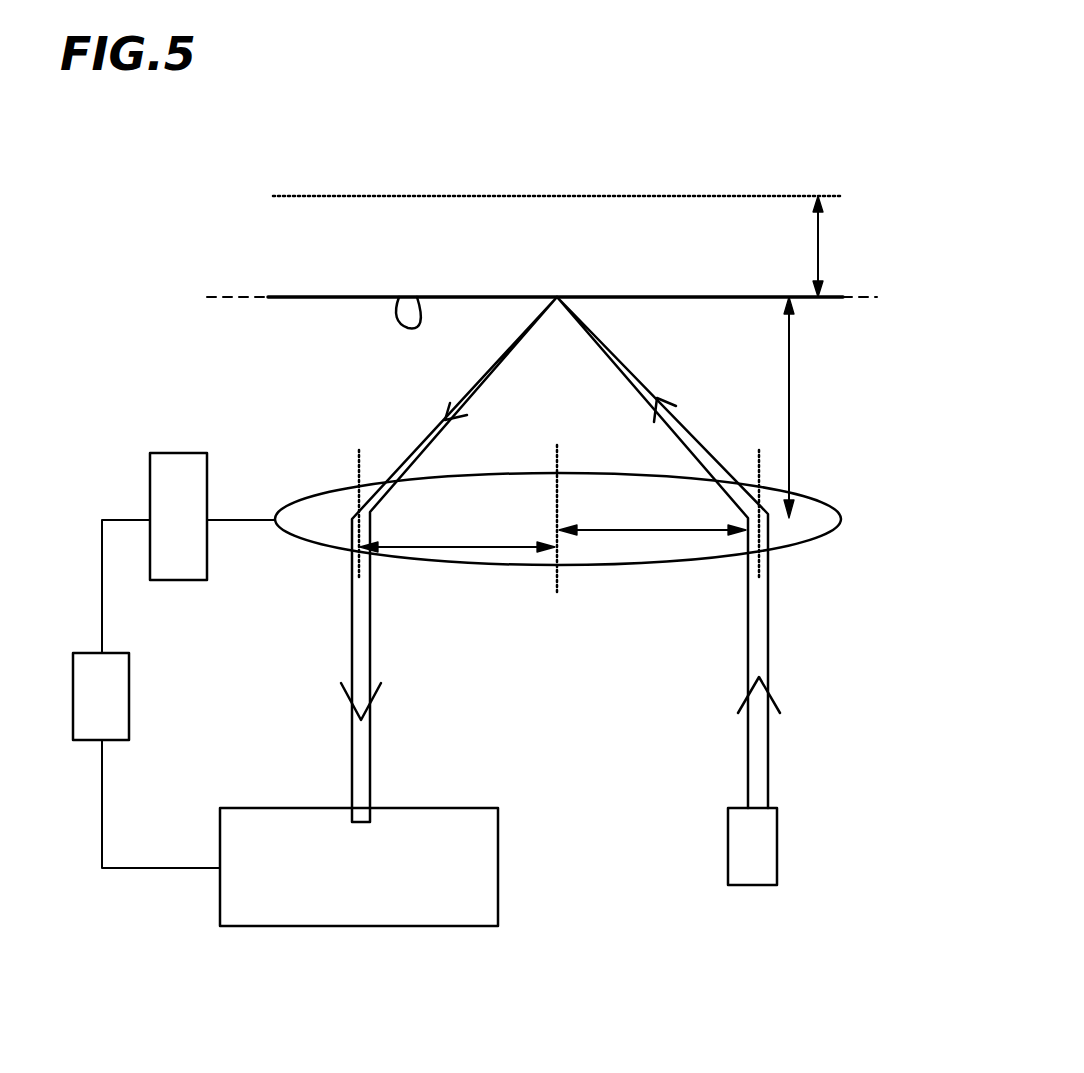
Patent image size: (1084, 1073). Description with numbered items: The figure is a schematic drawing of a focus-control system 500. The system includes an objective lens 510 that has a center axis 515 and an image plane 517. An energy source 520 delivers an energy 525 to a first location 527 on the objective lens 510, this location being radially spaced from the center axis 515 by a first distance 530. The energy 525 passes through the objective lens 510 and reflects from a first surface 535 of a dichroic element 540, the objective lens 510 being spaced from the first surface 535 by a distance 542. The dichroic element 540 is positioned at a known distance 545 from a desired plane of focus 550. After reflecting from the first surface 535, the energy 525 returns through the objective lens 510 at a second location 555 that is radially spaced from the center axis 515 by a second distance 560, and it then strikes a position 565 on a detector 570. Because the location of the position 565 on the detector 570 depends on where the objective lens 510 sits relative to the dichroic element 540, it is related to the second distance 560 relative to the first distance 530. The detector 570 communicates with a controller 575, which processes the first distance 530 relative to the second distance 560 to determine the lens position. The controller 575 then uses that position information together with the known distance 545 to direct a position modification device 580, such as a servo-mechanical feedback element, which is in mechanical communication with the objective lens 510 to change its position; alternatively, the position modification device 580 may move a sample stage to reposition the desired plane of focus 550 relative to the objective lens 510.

The system 500 is at (728, 132).
The objective lens 510 is at (830, 520).
The center axis 515 is at (560, 585).
The image plane 517 is at (226, 297).
The energy source 520 is at (755, 855).
The energy 525 is at (760, 750).
The first location 527 is at (759, 450).
The first distance 530 is at (660, 532).
The first surface 535 is at (417, 297).
The dichroic element 540 is at (843, 297).
The distance 542 is at (789, 400).
The known distance 545 is at (818, 248).
The desired plane of focus 550 is at (842, 196).
The second location 555 is at (358, 450).
The second distance 560 is at (450, 548).
The position 565 is at (360, 815).
The detector 570 is at (483, 860).
The controller 575 is at (112, 685).
The position modification device 580 is at (145, 467).